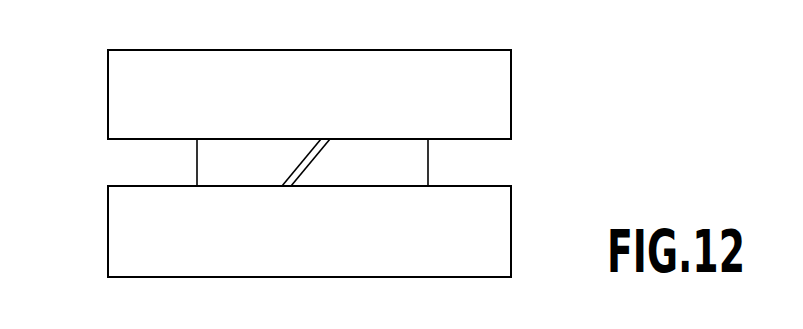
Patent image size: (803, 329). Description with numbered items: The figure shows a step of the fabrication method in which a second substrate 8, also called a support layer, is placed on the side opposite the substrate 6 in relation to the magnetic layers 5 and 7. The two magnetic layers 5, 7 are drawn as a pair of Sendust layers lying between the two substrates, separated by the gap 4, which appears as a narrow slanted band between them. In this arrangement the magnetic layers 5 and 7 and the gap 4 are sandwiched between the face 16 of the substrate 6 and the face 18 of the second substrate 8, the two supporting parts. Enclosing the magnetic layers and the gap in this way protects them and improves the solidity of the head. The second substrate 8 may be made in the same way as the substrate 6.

The gap 4 is at (322, 139).
The magnetic layer 5 is at (215, 180).
The substrate 6 is at (140, 68).
The magnetic layer 7 is at (420, 180).
The second substrate 8 is at (140, 268).
The face 16 is at (108, 146).
The face 18 is at (112, 180).